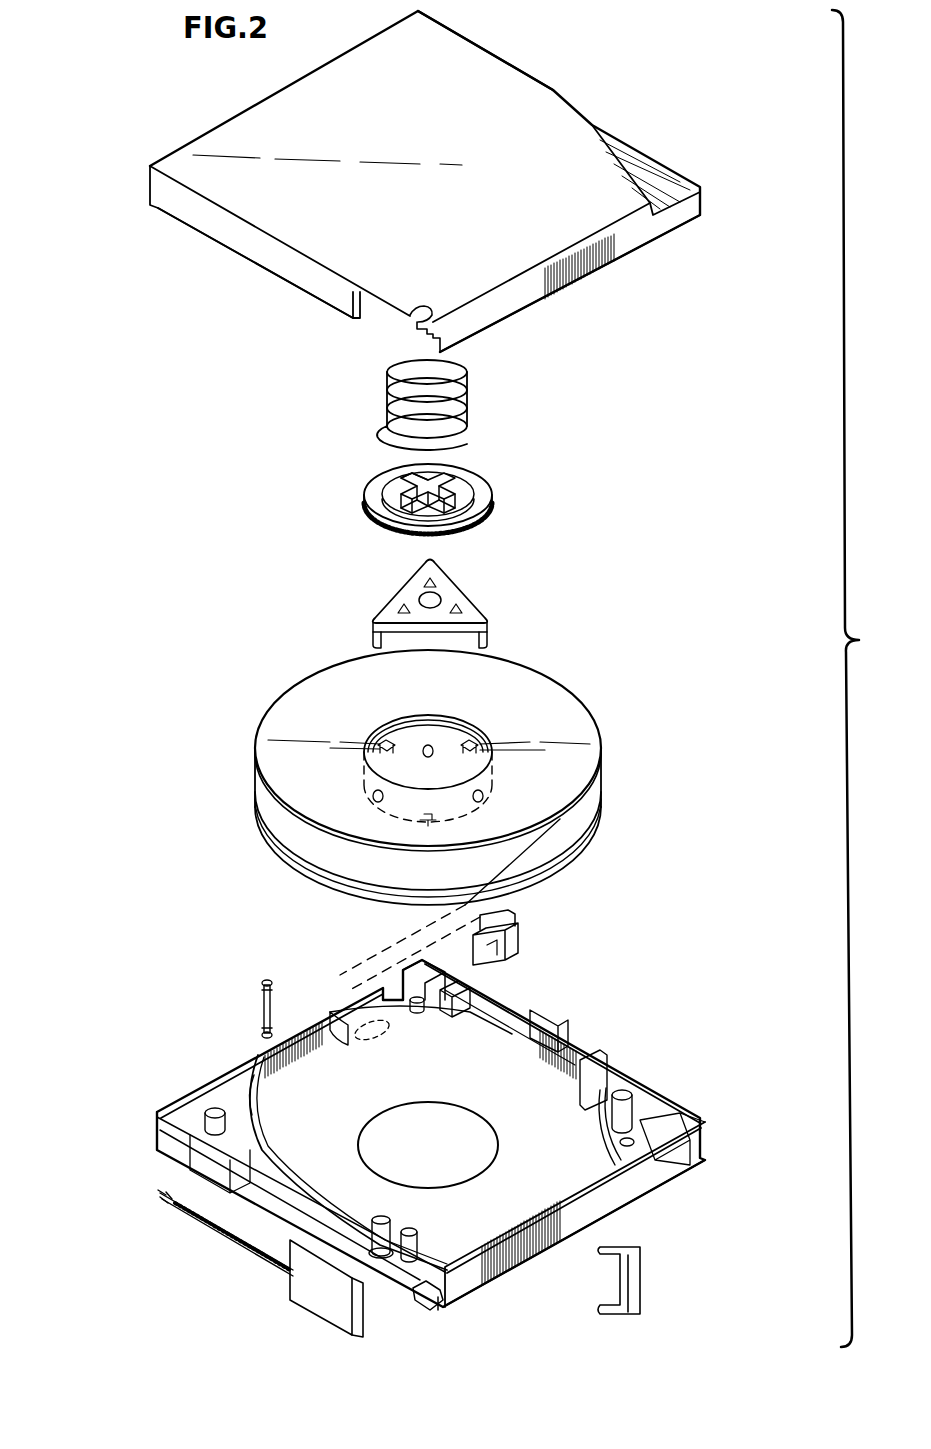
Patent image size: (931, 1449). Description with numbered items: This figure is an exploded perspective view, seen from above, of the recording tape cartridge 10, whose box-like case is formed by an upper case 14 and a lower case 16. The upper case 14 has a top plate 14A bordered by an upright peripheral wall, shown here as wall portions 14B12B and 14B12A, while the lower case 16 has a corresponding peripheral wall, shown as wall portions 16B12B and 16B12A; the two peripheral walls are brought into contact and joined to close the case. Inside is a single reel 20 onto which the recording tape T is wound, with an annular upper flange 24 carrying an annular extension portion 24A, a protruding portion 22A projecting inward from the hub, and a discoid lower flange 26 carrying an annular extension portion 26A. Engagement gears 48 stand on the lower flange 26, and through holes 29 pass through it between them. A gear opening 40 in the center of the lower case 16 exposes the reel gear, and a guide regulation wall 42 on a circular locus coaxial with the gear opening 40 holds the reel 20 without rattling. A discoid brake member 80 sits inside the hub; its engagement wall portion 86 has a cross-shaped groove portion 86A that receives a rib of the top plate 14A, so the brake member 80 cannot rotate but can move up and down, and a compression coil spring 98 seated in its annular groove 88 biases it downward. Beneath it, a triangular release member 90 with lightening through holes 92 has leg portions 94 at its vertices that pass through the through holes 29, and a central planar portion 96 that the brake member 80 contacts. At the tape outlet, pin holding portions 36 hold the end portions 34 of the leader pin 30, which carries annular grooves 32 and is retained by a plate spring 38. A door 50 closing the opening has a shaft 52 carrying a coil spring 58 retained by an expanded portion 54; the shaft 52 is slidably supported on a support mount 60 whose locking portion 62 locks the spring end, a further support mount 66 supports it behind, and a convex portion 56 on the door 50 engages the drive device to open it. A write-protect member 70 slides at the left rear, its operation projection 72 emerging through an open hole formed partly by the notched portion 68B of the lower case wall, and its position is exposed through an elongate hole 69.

The recording tape cartridge 10 is at (676, 86).
The upper case 14 is at (675, 172).
The top plate 14A is at (528, 108).
The peripheral wall 14B12B is at (235, 228).
The peripheral wall 14B12A is at (632, 237).
The pin holding portions 36 is at (415, 323).
The compression coil spring 98 is at (462, 372).
The brake member 80 is at (437, 468).
The annular groove 88 is at (395, 486).
The engagement wall portion 86 is at (452, 484).
The groove portion 86A is at (377, 441).
The release member 90 is at (452, 601).
The through holes 92 is at (440, 585).
The leg portions 94 is at (485, 643).
The planar portion 96 is at (420, 598).
The reel 20 is at (466, 759).
The upper flange 24 is at (560, 705).
The annular extension portion 24A is at (455, 727).
The protruding portion 22A is at (385, 732).
The lower flange 26 is at (600, 813).
The annular extension portion 26A is at (430, 735).
The through holes 29 is at (420, 742).
The engagement gears 48 is at (470, 740).
The recording tape T is at (289, 985).
The write-protect member 70 is at (535, 926).
The operation projection 72 is at (515, 915).
The lower case 16 is at (422, 1154).
The peripheral wall 16B12B is at (167, 1135).
The peripheral wall 16B12A is at (622, 1192).
The gear opening 40 is at (470, 1120).
The guide regulation wall 42 is at (203, 1085).
The elongate hole 69 is at (374, 1040).
The support mount 60 is at (265, 1148).
The locking portion 62 is at (258, 1118).
The support mount 66 is at (205, 1135).
The door 50 is at (370, 1320).
The expanded portion 54 is at (170, 1205).
The coil spring 58 is at (180, 1213).
The shaft 52 is at (240, 1240).
The convex portion 56 is at (332, 1316).
The plate spring 38 is at (640, 1290).
The leader pin 30 is at (226, 997).
The annular grooves 32 is at (258, 1005).
The end portions 34 is at (264, 980).
The notched portion 68B is at (395, 982).